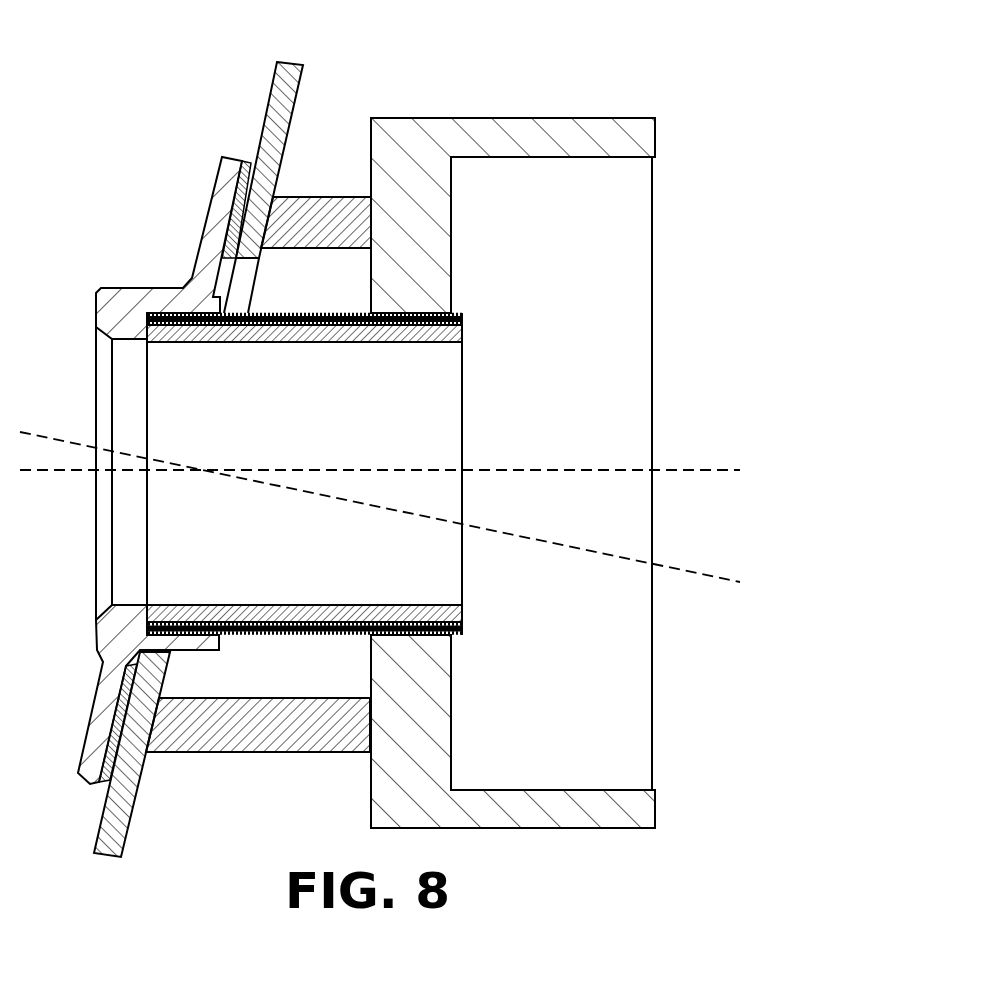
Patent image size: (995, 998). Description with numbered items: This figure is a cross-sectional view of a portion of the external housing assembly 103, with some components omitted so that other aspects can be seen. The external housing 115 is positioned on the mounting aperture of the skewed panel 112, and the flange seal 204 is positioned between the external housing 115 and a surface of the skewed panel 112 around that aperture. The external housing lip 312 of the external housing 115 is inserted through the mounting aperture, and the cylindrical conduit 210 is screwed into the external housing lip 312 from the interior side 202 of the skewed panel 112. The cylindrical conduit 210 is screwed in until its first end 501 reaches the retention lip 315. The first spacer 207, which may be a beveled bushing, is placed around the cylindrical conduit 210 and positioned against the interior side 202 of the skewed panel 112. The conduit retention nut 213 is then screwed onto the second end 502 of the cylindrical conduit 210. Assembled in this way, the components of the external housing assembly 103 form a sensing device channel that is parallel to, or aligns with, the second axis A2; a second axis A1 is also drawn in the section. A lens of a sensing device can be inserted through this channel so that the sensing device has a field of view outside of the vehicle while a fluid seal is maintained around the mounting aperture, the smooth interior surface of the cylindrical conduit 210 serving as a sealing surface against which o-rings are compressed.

The external housing assembly 103 is at (549, 35).
The skewed panel 112 is at (290, 62).
The external housing 115 is at (133, 236).
The interior side 202 is at (370, 106).
The flange seal 204 is at (102, 782).
The first spacer 207 is at (258, 754).
The cylindrical conduit 210 is at (466, 332).
The conduit retention nut 213 is at (629, 117).
The external housing lip 312 is at (211, 650).
The retention lip 315 is at (110, 313).
The first end 501 is at (179, 357).
The second end 502 is at (463, 647).
The tilted optical axis A1 is at (742, 586).
The second axis A2 is at (702, 468).